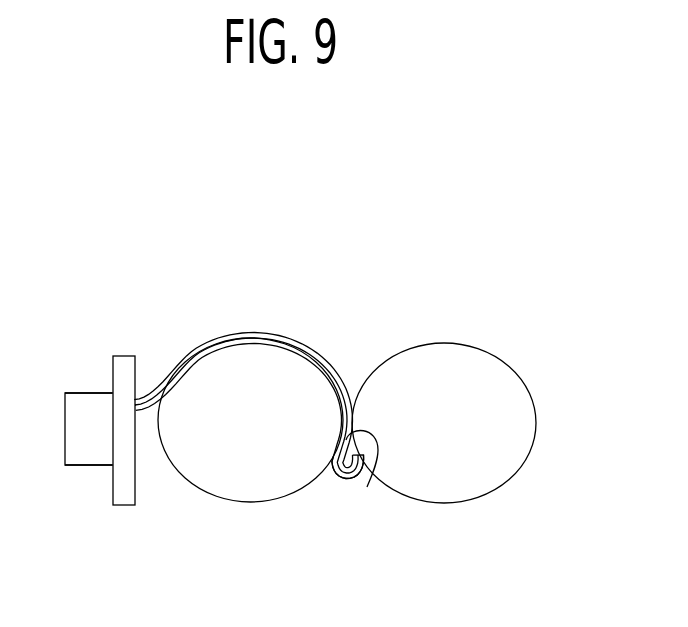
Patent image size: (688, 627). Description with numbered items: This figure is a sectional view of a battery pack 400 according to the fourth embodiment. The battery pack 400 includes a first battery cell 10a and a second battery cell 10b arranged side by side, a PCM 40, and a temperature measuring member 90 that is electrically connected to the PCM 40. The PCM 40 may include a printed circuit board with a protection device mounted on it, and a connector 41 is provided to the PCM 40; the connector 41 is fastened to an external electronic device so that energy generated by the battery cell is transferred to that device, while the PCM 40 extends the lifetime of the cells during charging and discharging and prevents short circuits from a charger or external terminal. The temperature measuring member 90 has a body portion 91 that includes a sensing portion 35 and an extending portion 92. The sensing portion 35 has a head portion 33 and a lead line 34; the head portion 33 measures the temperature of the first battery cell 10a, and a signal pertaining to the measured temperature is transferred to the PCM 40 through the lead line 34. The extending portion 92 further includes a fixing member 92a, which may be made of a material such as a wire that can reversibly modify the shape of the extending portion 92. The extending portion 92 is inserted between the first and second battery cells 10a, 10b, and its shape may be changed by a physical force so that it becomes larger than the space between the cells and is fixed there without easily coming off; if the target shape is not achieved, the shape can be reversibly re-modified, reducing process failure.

The battery pack 400 is at (546, 241).
The first battery cell 10a is at (243, 483).
The second battery cell 10b is at (455, 487).
The head portion 33 is at (331, 372).
The lead line 34 is at (262, 333).
The sensing portion 35 is at (317, 253).
The PCM 40 is at (116, 347).
The connector 41 is at (78, 393).
The temperature measuring member 90 is at (388, 276).
The body portion 91 is at (307, 335).
The extending portion 92 is at (334, 489).
The fixing member 92a is at (367, 487).